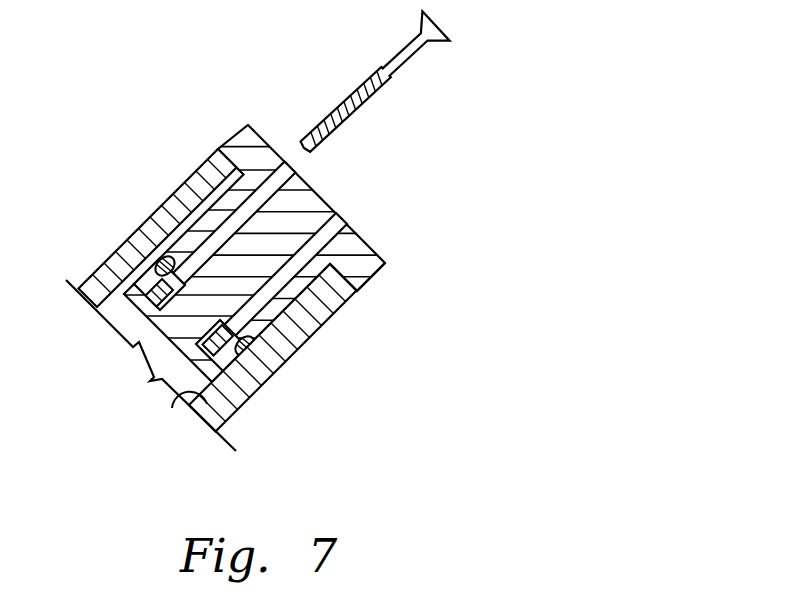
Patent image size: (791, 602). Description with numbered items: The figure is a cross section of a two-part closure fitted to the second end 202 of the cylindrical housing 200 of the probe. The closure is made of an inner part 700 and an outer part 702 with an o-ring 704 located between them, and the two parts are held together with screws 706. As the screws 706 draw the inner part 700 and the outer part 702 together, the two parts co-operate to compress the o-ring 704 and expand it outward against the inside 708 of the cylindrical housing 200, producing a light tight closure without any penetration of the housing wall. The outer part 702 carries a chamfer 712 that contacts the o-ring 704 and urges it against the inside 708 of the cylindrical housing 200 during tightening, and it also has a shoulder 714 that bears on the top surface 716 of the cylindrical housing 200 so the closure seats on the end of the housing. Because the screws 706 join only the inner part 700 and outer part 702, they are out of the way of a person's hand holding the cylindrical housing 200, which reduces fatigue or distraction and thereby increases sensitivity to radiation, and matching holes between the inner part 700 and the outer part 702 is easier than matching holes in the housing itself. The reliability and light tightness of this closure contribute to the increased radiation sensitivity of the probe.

The cylindrical housing 200 is at (237, 409).
The second end 202 is at (267, 288).
The inner part 700 is at (117, 330).
The outer part 702 is at (385, 266).
The o-ring 704 is at (267, 337).
The screws 706 is at (377, 97).
The inside 708 is at (183, 398).
The chamfer 712 is at (187, 253).
The shoulder 714 is at (208, 160).
The top surface 716 is at (337, 296).